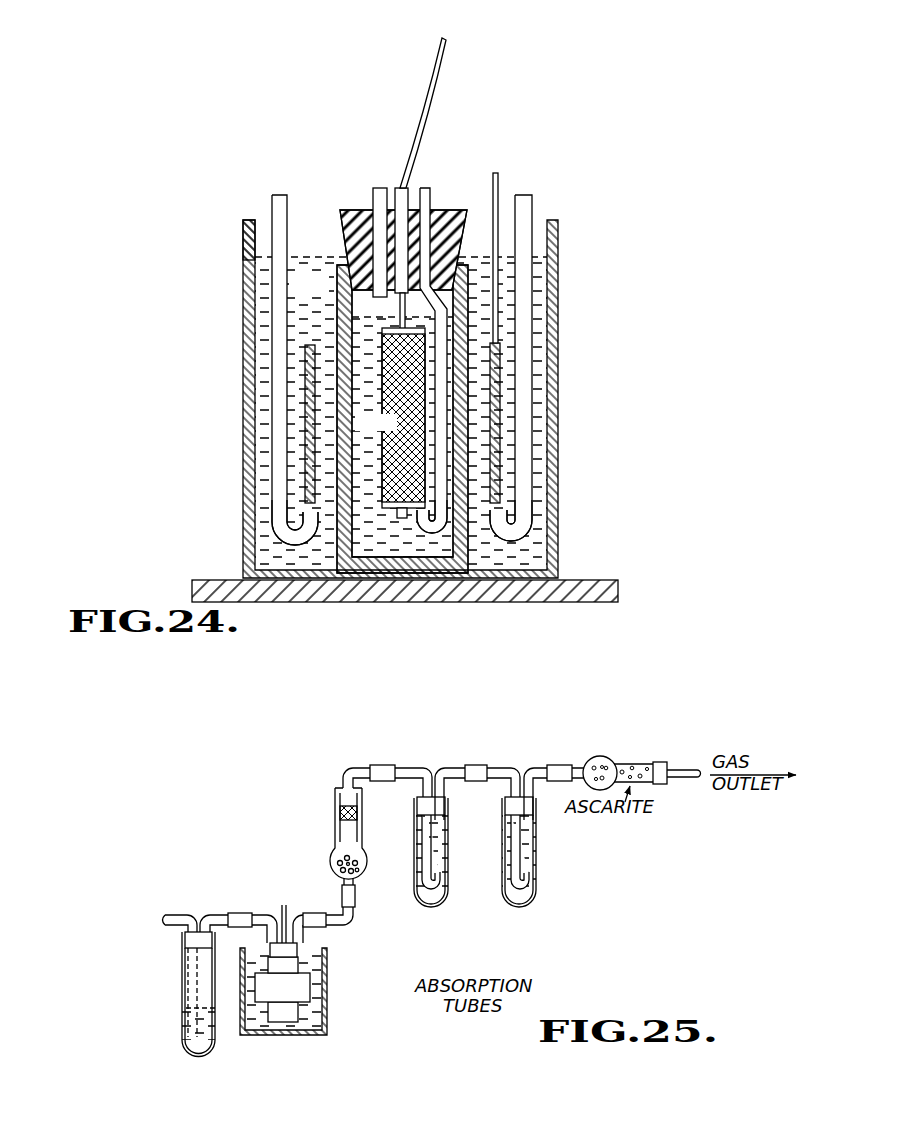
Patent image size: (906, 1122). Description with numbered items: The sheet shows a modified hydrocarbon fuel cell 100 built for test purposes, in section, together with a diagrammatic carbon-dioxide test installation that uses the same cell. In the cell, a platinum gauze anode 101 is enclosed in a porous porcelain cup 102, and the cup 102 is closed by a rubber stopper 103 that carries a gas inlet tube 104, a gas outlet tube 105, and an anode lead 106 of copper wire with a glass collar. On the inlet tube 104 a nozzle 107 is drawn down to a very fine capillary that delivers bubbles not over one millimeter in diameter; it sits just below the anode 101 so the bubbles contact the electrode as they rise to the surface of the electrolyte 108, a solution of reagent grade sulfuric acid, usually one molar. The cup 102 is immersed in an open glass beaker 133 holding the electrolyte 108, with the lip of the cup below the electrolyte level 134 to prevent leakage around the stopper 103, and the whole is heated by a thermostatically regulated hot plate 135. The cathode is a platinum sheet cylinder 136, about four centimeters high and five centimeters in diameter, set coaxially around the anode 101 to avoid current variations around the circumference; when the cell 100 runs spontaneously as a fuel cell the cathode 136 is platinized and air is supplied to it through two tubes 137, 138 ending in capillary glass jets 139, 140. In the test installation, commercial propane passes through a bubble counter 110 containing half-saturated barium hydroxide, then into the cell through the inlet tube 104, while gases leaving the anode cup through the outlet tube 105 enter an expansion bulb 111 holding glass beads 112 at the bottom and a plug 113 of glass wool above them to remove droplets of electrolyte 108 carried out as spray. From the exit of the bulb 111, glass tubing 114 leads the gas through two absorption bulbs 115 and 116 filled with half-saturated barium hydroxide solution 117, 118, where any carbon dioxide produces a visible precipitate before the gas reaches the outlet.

In FIG. 24, the cell 100 is at (301, 395).
In FIG. 25, the cell 100 is at (311, 1028).
In FIG. 24, the anode 101 is at (380, 468).
In FIG. 24, the porous porcelain cup 102 is at (401, 413).
In FIG. 25, the porous porcelain cup 102 is at (298, 1029).
In FIG. 24, the rubber stopper 103 is at (345, 208).
In FIG. 25, the rubber stopper 103 is at (314, 941).
In FIG. 24, the gas inlet tube 104 is at (426, 184).
In FIG. 25, the gas inlet tube 104 is at (250, 913).
In FIG. 24, the gas outlet tube 105 is at (373, 186).
In FIG. 25, the gas outlet tube 105 is at (324, 913).
In FIG. 24, the anode lead 106 is at (446, 44).
In FIG. 25, the anode lead 106 is at (290, 904).
In FIG. 24, the nozzle 107 is at (408, 527).
In FIG. 24, the electrolyte 108 is at (334, 318).
In FIG. 25, the electrolyte 108 is at (321, 960).
In FIG. 25, the bubble counter 110 is at (158, 920).
In FIG. 25, the expansion bulb 111 is at (333, 826).
In FIG. 25, the glass beads 112 is at (331, 857).
In FIG. 25, the plug of glass wool 113 is at (338, 822).
In FIG. 25, the glass tubing 114 is at (376, 768).
In FIG. 25, the absorption bulb 115 is at (452, 836).
In FIG. 25, the absorption bulb 116 is at (587, 836).
In FIG. 25, the barium hydroxide solution 117 is at (450, 918).
In FIG. 25, the barium hydroxide solution 118 is at (525, 905).
In FIG. 24, the open glass beaker 133 is at (226, 230).
In FIG. 24, the electrolyte level 134 is at (316, 237).
In FIG. 24, the hot plate 135 is at (581, 577).
In FIG. 24, the cathode cylinder 136 is at (502, 359).
In FIG. 25, the cathode cylinder 136 is at (314, 990).
In FIG. 24, the air tube 137 is at (524, 194).
In FIG. 24, the air tube 138 is at (278, 194).
In FIG. 24, the capillary glass jet 139 is at (511, 531).
In FIG. 24, the capillary glass jet 140 is at (294, 531).